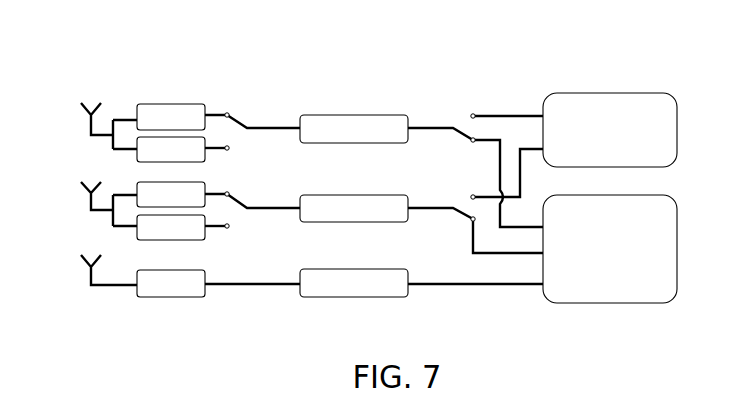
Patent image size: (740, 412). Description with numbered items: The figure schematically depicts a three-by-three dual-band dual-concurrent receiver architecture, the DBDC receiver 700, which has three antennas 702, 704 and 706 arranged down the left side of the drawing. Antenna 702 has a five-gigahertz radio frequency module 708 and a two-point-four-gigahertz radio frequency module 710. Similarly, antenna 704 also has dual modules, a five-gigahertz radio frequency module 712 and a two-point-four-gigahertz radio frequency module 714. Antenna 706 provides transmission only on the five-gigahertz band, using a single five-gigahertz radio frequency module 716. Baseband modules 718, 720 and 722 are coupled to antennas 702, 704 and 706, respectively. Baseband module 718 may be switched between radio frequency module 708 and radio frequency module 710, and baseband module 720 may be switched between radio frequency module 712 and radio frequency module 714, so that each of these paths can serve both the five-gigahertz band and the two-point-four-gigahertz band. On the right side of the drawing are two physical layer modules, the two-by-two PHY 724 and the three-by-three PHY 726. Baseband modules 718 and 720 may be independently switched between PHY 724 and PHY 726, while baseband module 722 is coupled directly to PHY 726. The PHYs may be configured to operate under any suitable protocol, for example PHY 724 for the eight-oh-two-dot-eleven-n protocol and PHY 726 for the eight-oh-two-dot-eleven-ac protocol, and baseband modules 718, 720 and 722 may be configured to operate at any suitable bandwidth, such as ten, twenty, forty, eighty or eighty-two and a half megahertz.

The 3×3 DBDC 700 is at (336, 66).
The antenna 702 is at (83, 117).
The antenna 704 is at (80, 195).
The antenna 706 is at (83, 268).
The 5 GHz radio frequency module (5G RF) 708 is at (167, 104).
The 2.4 GHz radio frequency module (2G RF) 710 is at (140, 157).
The 5 GHz radio frequency module (5G RF) 712 is at (195, 184).
The 2.4 GHz radio frequency module (2G RF) 714 is at (205, 240).
The 5 GHz radio frequency module (5G RF) 716 is at (173, 298).
The baseband module (BB) 718 is at (350, 144).
The baseband module (BB) 720 is at (348, 222).
The baseband module (BB) 722 is at (358, 297).
The 2×2 PHY 724 is at (597, 93).
The 3×3 PHY 726 is at (585, 196).